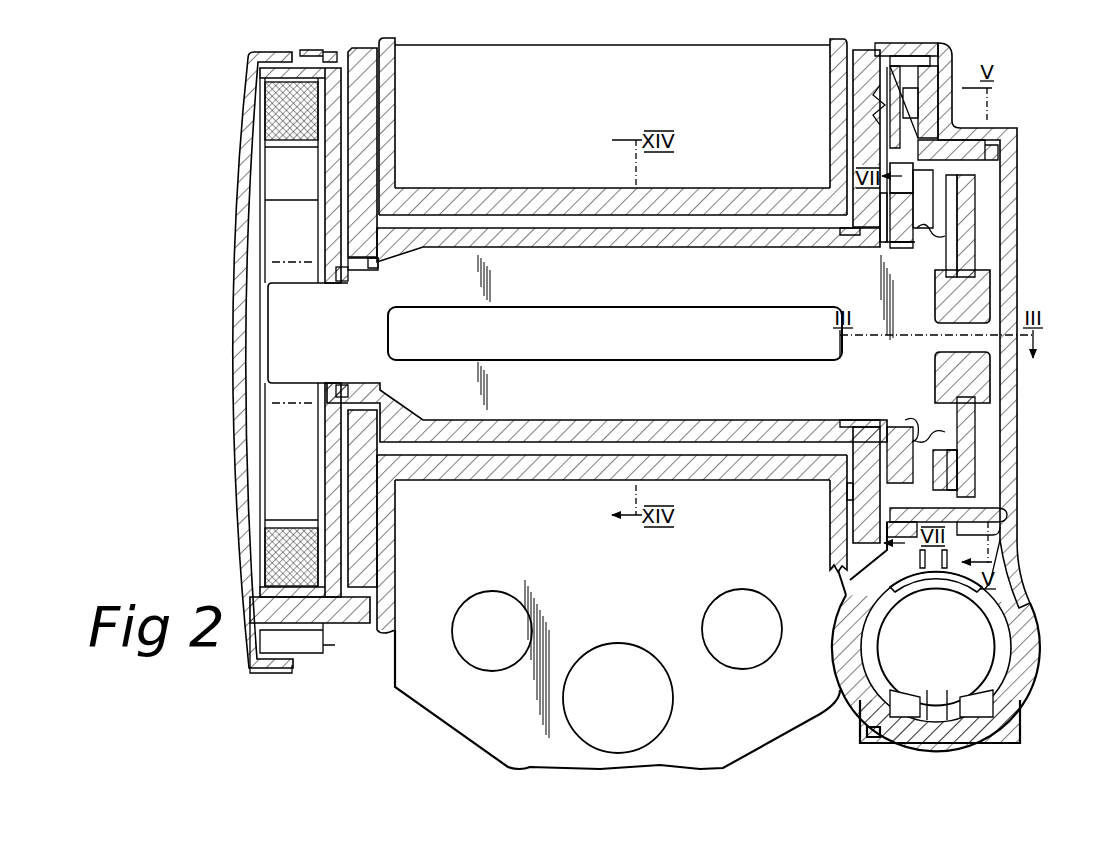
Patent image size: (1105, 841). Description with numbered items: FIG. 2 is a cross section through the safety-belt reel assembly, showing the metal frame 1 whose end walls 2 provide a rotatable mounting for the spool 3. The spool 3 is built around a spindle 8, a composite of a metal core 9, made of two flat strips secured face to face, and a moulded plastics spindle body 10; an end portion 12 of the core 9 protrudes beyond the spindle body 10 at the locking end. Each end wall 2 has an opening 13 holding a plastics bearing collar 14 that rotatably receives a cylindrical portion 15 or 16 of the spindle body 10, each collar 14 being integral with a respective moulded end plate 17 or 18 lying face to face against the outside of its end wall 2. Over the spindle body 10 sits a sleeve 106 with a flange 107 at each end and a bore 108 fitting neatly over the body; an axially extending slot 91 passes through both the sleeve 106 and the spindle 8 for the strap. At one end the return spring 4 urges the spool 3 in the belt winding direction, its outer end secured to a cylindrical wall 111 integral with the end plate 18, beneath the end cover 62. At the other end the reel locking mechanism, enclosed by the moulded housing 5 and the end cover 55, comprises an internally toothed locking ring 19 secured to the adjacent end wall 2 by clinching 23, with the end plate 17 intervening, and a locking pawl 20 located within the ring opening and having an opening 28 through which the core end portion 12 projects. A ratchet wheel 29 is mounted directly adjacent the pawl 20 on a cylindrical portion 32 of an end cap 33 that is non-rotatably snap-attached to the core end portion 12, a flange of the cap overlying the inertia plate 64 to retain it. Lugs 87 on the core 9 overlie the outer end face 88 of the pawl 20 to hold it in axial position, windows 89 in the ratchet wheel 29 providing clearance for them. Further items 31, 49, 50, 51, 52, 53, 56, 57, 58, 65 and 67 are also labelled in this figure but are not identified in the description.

The metal frame 1 is at (478, 698).
The end wall 2 is at (361, 111).
The spool 3 is at (533, 482).
The return spring 4 is at (290, 533).
The housing 5 is at (995, 741).
The spindle 8 is at (508, 445).
The metal core 9 is at (740, 397).
The spindle body 10 is at (705, 434).
The end portion 12 is at (916, 306).
The opening 13 is at (372, 262).
The bearing collar 14 is at (343, 273).
The cylindrical portion 15 is at (877, 236).
The cylindrical portion 16 is at (362, 272).
The end plate 17 is at (848, 491).
The end plate 18 is at (333, 195).
The locking ring 19 is at (927, 83).
The locking pawl 20 is at (907, 210).
The clinching 23 is at (878, 110).
The opening 28 is at (895, 249).
The ratchet wheel 29 is at (946, 466).
The shaft collar 31 is at (941, 176).
The cylindrical portion 32 is at (940, 371).
The end cap 33 is at (1002, 276).
The cylinder 49 is at (940, 654).
The bore 50 is at (976, 641).
The cylinder wall 51 is at (1026, 641).
The liner 52 is at (992, 671).
The wall 53 is at (836, 626).
The end cover 55 is at (1010, 381).
The recess 56 is at (866, 591).
The rib 57 is at (1021, 596).
The collar 58 is at (862, 560).
The end cover 62 is at (234, 272).
The inertia plate 64 is at (966, 201).
The lower seal ring 65 is at (961, 392).
The housing cover 67 is at (1014, 131).
The lugs 87 is at (941, 246).
The outer end face 88 is at (951, 216).
The windows 89 is at (947, 233).
The slot 91 is at (598, 325).
The sleeve 106 is at (696, 202).
The flange 107 is at (391, 146).
The bore 108 is at (600, 440).
The cylindrical wall 111 is at (290, 62).